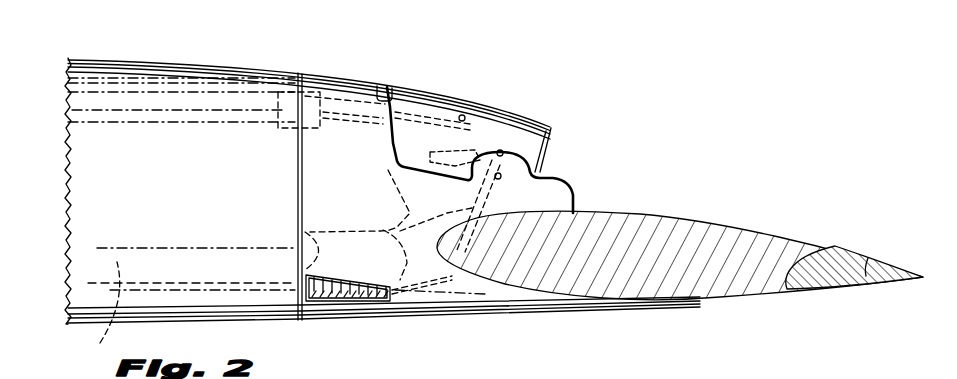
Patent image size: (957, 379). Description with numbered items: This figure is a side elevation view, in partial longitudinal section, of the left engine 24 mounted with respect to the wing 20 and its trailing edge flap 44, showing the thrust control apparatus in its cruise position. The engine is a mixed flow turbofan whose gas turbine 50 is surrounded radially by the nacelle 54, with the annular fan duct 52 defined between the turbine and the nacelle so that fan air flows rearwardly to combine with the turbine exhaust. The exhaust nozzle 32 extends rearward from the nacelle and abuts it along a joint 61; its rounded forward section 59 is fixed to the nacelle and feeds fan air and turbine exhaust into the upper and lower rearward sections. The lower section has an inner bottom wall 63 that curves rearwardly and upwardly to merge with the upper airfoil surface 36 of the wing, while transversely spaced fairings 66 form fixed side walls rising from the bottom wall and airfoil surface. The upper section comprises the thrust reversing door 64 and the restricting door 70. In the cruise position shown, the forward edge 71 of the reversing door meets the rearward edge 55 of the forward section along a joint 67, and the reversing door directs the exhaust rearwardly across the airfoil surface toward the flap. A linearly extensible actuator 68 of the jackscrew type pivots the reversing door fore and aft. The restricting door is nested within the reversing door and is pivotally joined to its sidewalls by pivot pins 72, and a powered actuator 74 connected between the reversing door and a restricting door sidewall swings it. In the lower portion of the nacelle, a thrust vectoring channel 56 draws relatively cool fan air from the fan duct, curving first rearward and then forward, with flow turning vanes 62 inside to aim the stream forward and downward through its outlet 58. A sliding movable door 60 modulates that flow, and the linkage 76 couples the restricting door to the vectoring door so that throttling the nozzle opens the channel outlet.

The wing 20 is at (798, 244).
The engine 24 is at (324, 63).
The exhaust nozzle 32 is at (552, 157).
The upper airfoil surface 36 is at (696, 221).
The trailing edge flap 44 is at (877, 276).
The gas turbine 50 is at (345, 135).
The annular fan duct 52 is at (200, 108).
The nacelle 54 is at (175, 64).
The rearward edge 55 is at (392, 137).
The thrust vectoring channel 56 is at (358, 270).
The outlet 58 is at (327, 300).
The forward section 59 is at (323, 206).
The movable door 60 is at (313, 309).
The joint 61 is at (290, 192).
The flow turning vane 62 is at (375, 290).
The inner bottom wall 63 is at (553, 186).
The thrust reversing door 64 is at (475, 105).
The fairing 66 is at (574, 205).
The joint 67 is at (383, 150).
The linearly extensible actuator 68 is at (413, 117).
The restricting door 70 is at (514, 120).
The forward edge 71 is at (391, 83).
The pivot pin 72 is at (538, 126).
The powered actuator 74 is at (395, 191).
The linkage 76 is at (459, 278).